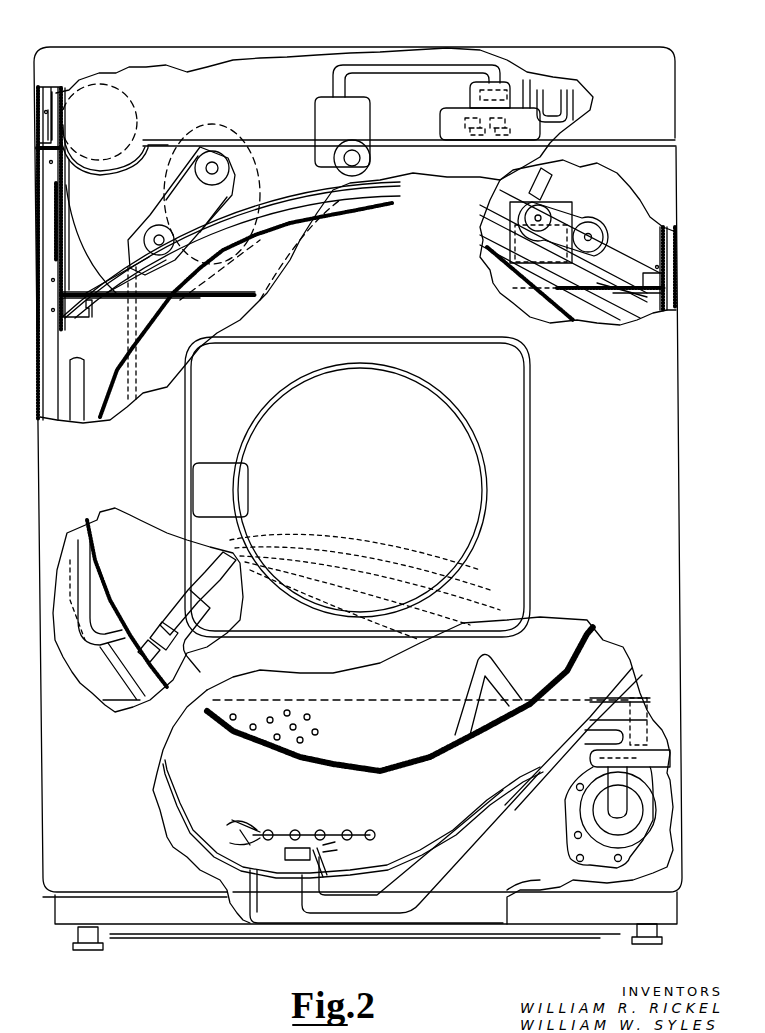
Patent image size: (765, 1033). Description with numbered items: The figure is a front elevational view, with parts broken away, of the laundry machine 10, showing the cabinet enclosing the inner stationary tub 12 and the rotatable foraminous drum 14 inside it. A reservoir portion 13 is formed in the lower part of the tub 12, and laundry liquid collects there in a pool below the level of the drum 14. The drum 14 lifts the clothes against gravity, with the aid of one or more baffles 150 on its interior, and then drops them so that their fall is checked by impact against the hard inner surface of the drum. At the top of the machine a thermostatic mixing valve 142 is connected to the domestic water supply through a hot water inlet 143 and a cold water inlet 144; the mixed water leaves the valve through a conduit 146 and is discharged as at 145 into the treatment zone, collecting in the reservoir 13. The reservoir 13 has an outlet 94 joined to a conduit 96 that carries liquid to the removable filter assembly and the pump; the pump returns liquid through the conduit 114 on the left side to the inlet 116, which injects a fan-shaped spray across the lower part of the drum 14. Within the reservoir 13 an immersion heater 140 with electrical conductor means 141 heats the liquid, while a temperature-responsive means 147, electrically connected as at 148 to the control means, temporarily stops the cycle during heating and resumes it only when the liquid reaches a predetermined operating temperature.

The laundry machine 10 is at (690, 66).
The inner stationary tub 12 is at (160, 787).
The reservoir portion 13 is at (233, 860).
The rotatable foraminous basket (drum, container) 14 is at (390, 753).
The outlet 94 is at (300, 870).
The conduit 96 is at (383, 893).
The conduit (machine inlet conduit) 114 is at (84, 385).
The inlet 116 is at (213, 640).
The immersion heater 140 is at (347, 830).
The electrical conductor means 141 is at (253, 837).
The thermostatic mixing valve 142 is at (440, 118).
The hot water inlet 143 is at (546, 101).
The cold water inlet 144 is at (590, 110).
The discharge (of mixed water) 145 is at (366, 162).
The conduit 146 is at (408, 62).
The temperature-responsive means 147 is at (310, 848).
The electrical connection 148 is at (318, 862).
The baffles 150 is at (505, 681).